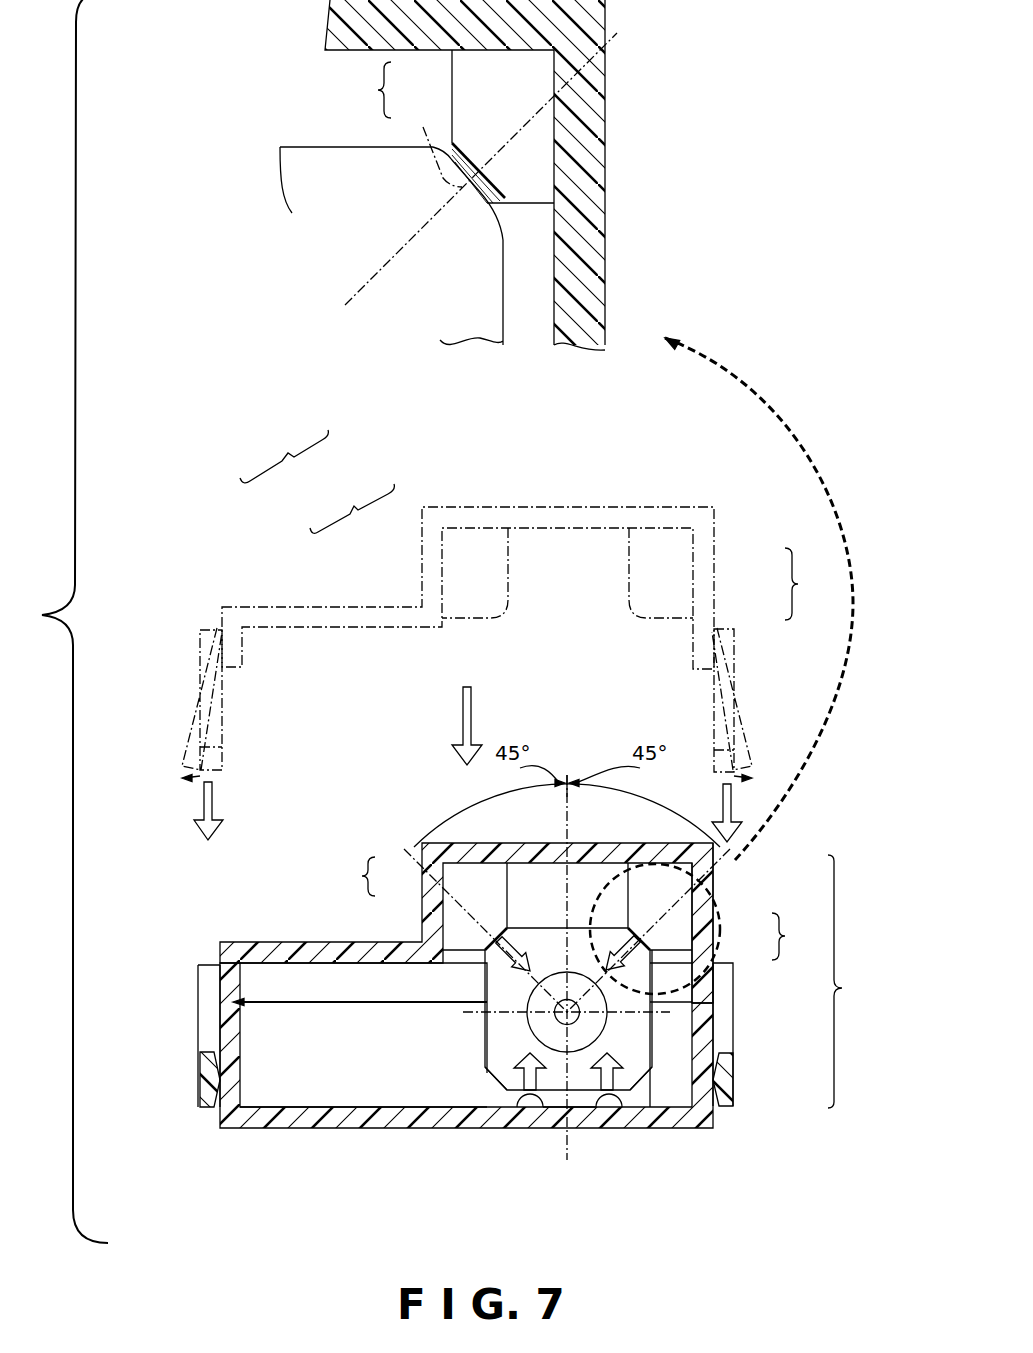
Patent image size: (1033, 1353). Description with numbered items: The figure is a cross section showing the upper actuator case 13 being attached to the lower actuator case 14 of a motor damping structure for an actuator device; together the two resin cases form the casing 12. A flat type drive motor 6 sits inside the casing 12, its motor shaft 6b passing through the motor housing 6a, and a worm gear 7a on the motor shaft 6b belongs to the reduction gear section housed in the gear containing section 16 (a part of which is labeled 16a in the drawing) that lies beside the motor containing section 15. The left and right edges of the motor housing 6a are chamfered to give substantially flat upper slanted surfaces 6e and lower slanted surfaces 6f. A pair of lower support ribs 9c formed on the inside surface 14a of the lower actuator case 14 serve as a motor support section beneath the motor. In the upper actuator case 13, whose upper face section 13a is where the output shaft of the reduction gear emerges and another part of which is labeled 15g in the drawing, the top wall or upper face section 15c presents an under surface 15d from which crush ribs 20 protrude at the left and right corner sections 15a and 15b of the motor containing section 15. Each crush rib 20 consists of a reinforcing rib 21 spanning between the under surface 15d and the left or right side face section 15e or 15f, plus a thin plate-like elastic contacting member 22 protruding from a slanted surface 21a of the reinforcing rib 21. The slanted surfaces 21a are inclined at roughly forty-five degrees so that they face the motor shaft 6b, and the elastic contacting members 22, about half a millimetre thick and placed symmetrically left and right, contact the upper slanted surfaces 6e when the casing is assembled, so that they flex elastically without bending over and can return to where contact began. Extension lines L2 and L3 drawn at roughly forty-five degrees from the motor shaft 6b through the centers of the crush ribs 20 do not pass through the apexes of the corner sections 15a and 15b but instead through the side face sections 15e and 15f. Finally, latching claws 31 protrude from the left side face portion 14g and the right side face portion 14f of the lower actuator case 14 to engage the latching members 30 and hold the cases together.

The drive motor 6 is at (333, 146).
The motor housing 6a is at (310, 146).
The motor shaft 6b is at (580, 1003).
The upper slanted surfaces 6e is at (505, 198).
The lower slanted surfaces 6f is at (495, 1094).
The worm gear 7a is at (525, 993).
The lower support ribs 9c is at (520, 1102).
The casing 12 is at (655, 107).
The upper actuator case 13 is at (606, 135).
The upper face section 13a is at (284, 456).
The lower actuator case 14 is at (713, 1122).
The inside surface 14a is at (556, 1105).
The right side face portion 14f is at (715, 1022).
The left side face portion 14g is at (225, 1035).
The motor containing section 15 is at (553, 911).
The left corner section 15a is at (470, 587).
The right corner section 15b is at (682, 536).
The upper face section 15c is at (497, 593).
The under surface 15d is at (578, 881).
The left side face section 15e is at (443, 933).
The right side face section 15f is at (688, 918).
The flange 15g is at (222, 618).
The gear containing section 16 is at (360, 1054).
The box portion 16a is at (297, 602).
The crush ribs 20 is at (567, 511).
The reinforcing rib 21 is at (463, 82).
The slanted surface 21a is at (508, 195).
The elastic contacting member 22 is at (443, 148).
The latching members 30 is at (196, 683).
The latching claws 31 is at (203, 1054).
The extension line L2 is at (420, 846).
The extension line L3 is at (745, 856).